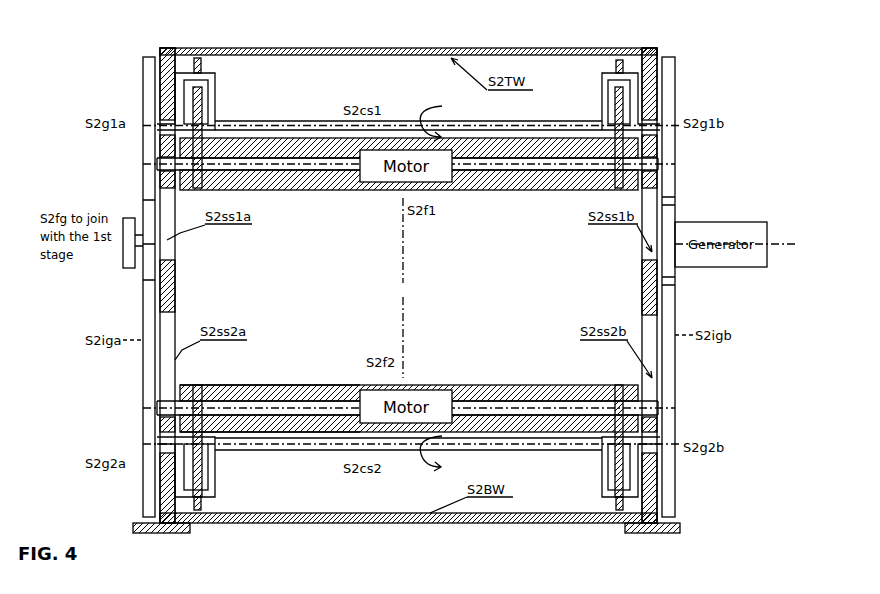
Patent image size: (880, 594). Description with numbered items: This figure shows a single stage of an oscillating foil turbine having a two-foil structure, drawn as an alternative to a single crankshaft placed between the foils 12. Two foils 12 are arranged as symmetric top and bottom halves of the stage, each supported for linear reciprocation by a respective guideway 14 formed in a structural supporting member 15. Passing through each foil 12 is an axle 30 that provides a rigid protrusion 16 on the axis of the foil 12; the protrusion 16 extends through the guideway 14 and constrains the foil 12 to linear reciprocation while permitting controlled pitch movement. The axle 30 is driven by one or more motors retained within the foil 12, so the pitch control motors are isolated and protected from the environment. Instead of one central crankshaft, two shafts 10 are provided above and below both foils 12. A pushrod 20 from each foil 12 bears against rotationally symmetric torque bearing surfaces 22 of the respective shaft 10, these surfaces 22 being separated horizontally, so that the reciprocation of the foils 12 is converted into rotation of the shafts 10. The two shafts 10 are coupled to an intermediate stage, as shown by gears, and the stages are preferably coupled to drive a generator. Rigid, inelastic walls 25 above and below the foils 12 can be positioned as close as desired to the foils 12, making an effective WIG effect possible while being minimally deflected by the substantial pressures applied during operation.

The shaft 10 is at (290, 124).
The foil 12 is at (478, 389).
The guideway 14 is at (166, 205).
The structural supporting member 15 is at (645, 290).
The rigid protrusion 16 is at (659, 168).
The pushrod 20 is at (205, 103).
The torque bearing surfaces 22 is at (208, 75).
The walls 25 is at (408, 48).
The axle 30 is at (323, 404).